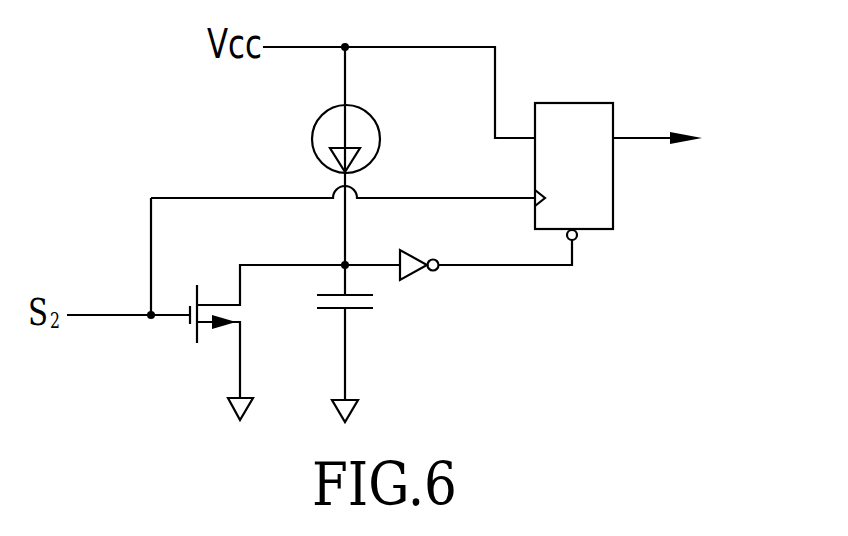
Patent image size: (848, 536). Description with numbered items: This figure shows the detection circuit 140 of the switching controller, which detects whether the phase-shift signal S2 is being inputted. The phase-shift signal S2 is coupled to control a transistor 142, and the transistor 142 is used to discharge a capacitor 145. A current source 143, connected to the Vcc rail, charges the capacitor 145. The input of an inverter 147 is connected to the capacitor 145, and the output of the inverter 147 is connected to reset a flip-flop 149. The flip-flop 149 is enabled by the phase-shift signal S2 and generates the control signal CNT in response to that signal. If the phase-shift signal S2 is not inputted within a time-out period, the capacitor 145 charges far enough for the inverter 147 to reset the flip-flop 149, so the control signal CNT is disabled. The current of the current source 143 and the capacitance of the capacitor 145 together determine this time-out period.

The detection circuit 140 is at (680, 47).
The transistor 142 is at (197, 296).
The current source 143 is at (374, 121).
The capacitor 145 is at (362, 311).
The inverter 147 is at (413, 250).
The flip-flop 149 is at (602, 231).